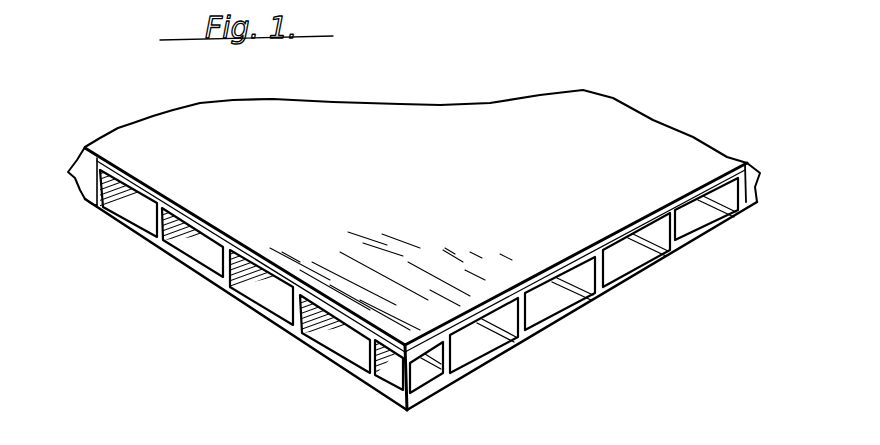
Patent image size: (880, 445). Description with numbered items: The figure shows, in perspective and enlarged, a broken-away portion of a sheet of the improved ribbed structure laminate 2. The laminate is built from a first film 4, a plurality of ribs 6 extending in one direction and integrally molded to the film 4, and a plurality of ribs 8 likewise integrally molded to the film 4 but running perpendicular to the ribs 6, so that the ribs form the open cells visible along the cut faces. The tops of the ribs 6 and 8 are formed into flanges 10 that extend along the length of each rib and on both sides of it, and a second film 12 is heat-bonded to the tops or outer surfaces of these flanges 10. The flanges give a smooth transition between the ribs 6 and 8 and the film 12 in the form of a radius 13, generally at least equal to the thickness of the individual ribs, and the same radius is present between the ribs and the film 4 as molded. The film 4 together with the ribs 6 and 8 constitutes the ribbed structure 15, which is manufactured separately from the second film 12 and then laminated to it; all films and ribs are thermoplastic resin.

The ribbed structure laminate 2 is at (690, 107).
The first film 4 is at (507, 354).
The ribs 6 is at (589, 282).
The ribs 8 is at (169, 240).
The flanges 10 is at (356, 347).
The second film 12 is at (676, 197).
The radius 13 is at (386, 374).
The ribbed structure 15 is at (68, 172).